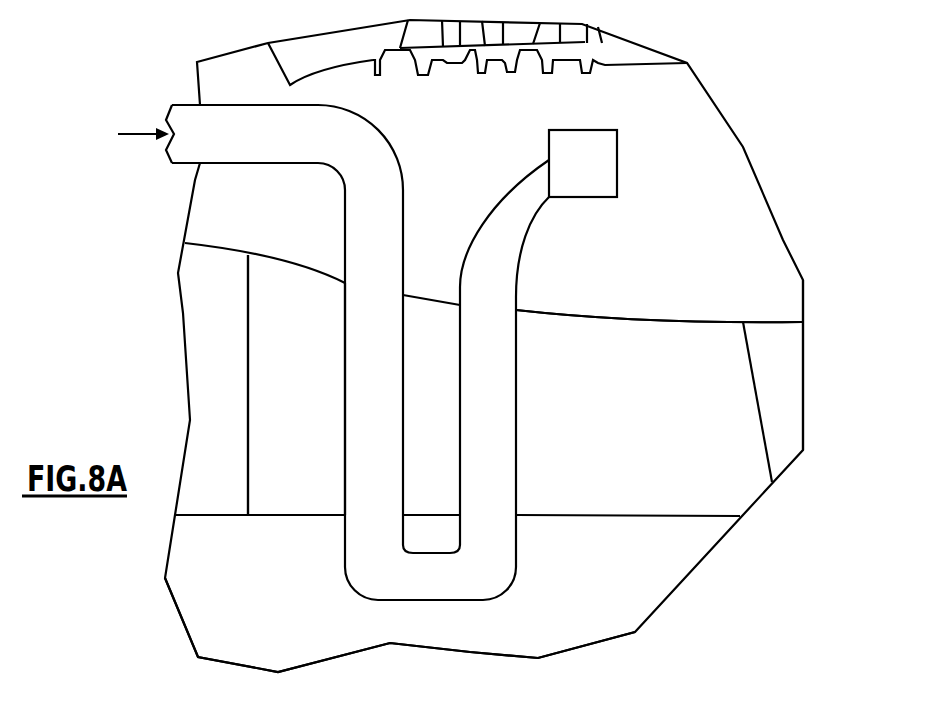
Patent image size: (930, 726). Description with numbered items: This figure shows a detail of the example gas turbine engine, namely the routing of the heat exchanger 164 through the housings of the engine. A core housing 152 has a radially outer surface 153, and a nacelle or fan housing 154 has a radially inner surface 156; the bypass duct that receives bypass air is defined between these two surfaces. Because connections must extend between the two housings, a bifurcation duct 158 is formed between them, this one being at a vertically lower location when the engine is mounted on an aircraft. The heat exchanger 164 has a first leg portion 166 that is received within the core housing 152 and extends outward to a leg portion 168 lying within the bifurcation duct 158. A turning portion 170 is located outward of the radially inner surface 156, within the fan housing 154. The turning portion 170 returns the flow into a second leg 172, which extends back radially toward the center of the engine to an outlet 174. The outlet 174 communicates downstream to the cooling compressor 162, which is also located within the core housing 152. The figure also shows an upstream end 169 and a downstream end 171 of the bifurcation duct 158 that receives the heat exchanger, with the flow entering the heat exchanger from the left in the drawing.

The core housing 152 is at (674, 216).
The radially outer surface 153 is at (677, 318).
The fan housing 154 is at (480, 627).
The radially inner surface 156 is at (318, 515).
The bifurcation duct 158 is at (597, 353).
The cooling compressor 162 is at (608, 155).
The heat exchanger 164 is at (377, 195).
The first leg portion 166 is at (363, 247).
The leg portion 168 is at (357, 428).
The upstream end 169 is at (248, 374).
The turning portion 170 is at (378, 585).
The downstream end 171 is at (757, 385).
The second leg 172 is at (493, 422).
The outlet 174 is at (523, 217).